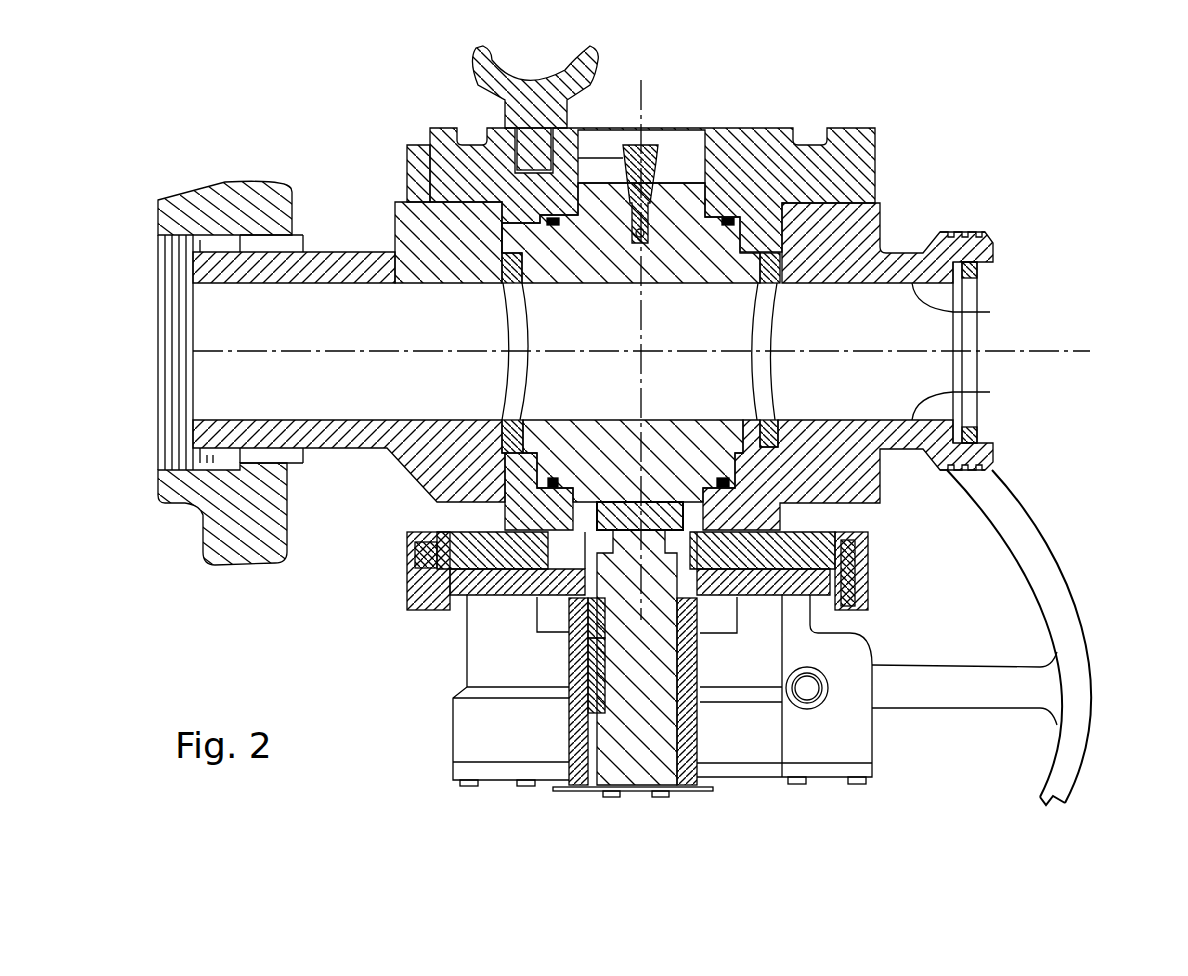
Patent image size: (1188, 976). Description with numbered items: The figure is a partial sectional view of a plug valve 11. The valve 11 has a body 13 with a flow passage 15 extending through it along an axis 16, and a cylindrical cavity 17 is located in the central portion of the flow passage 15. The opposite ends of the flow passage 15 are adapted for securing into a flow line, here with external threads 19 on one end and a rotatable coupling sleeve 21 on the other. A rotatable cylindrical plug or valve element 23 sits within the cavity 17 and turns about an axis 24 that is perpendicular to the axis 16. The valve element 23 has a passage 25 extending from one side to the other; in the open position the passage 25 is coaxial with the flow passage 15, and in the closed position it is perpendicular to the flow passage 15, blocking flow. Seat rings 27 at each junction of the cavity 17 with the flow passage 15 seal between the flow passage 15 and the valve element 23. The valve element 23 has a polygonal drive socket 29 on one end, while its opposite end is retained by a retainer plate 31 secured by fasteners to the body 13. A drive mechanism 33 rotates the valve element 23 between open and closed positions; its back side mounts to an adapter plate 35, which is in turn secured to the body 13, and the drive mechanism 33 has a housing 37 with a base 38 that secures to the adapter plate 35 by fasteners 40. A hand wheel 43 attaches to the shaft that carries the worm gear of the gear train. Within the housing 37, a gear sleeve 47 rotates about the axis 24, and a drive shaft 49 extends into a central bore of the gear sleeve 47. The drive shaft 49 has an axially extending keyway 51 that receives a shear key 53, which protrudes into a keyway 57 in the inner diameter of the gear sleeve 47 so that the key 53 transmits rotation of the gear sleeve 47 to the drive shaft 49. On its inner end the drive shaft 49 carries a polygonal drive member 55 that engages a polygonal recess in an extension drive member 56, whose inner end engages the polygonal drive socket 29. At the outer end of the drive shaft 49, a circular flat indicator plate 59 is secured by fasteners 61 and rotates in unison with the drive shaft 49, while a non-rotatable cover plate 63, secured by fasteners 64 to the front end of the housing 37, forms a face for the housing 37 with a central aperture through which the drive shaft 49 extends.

The valve 11 is at (1024, 217).
The body 13 is at (882, 215).
The flow passage 15 is at (950, 310).
The axis 16 is at (1058, 352).
The cavity 17 is at (775, 290).
The external threads 19 is at (960, 232).
The rotatable coupling sleeve 21 is at (207, 183).
The valve element 23 is at (672, 207).
The axis 24 is at (645, 93).
The passage 25 is at (668, 285).
The seat rings 27 is at (503, 285).
The polygonal drive socket 29 is at (593, 512).
The retainer plate 31 is at (407, 163).
The drive mechanism 33 is at (1102, 560).
The adapter plate 35 is at (872, 543).
The housing 37 is at (852, 667).
The base 38 is at (872, 577).
The fasteners 40 is at (863, 555).
The hand wheel 43 is at (1040, 543).
The gear sleeve 47 is at (585, 705).
The drive shaft 49 is at (650, 727).
The keyway 51 is at (697, 663).
The shear key 53 is at (600, 655).
The polygonal drive member 55 is at (587, 576).
The extension drive member 56 is at (597, 545).
The keyway 57 is at (568, 627).
The indicator plate 59 is at (578, 790).
The fasteners 61 is at (613, 797).
The cover plate 63 is at (460, 770).
The fasteners 64 is at (855, 785).